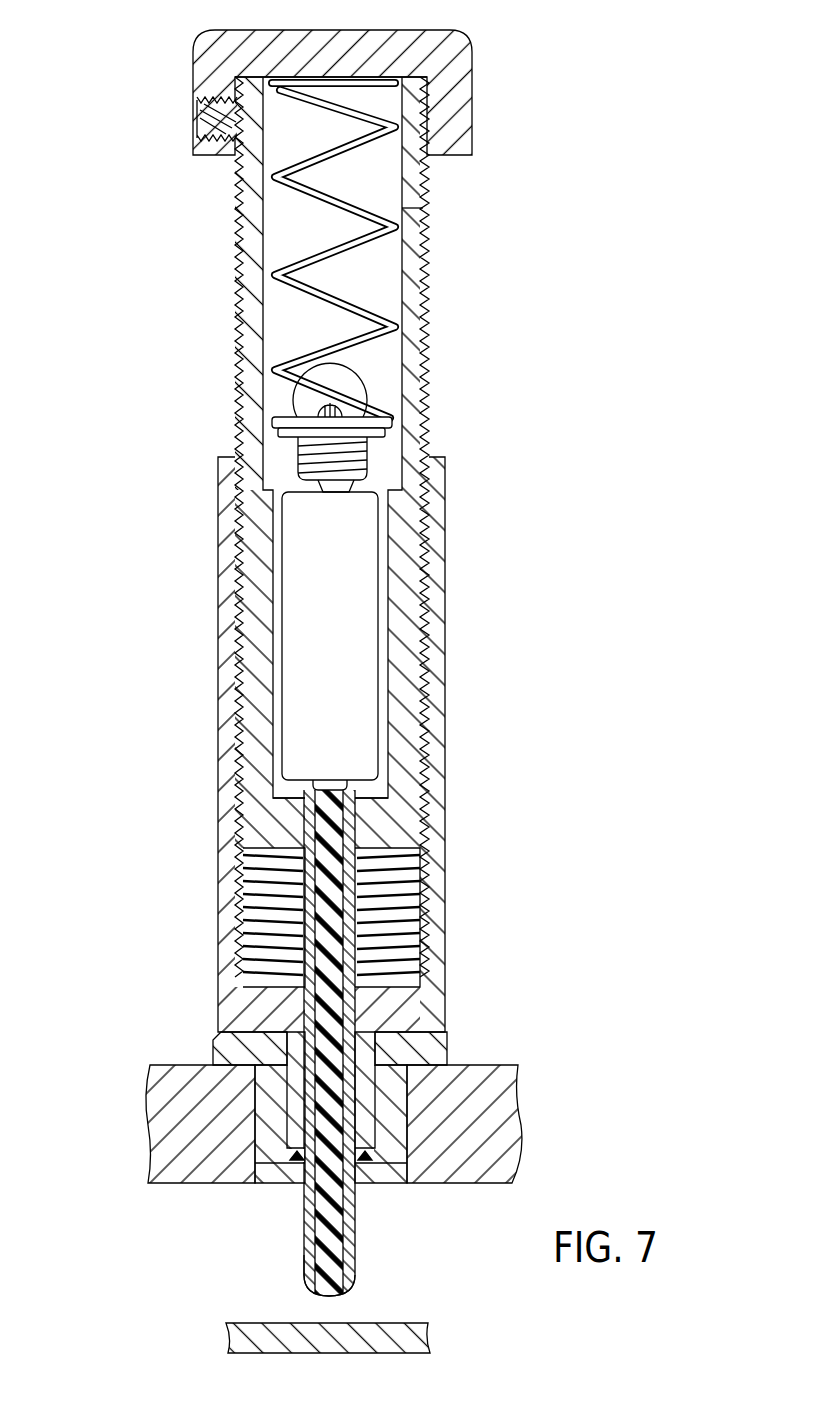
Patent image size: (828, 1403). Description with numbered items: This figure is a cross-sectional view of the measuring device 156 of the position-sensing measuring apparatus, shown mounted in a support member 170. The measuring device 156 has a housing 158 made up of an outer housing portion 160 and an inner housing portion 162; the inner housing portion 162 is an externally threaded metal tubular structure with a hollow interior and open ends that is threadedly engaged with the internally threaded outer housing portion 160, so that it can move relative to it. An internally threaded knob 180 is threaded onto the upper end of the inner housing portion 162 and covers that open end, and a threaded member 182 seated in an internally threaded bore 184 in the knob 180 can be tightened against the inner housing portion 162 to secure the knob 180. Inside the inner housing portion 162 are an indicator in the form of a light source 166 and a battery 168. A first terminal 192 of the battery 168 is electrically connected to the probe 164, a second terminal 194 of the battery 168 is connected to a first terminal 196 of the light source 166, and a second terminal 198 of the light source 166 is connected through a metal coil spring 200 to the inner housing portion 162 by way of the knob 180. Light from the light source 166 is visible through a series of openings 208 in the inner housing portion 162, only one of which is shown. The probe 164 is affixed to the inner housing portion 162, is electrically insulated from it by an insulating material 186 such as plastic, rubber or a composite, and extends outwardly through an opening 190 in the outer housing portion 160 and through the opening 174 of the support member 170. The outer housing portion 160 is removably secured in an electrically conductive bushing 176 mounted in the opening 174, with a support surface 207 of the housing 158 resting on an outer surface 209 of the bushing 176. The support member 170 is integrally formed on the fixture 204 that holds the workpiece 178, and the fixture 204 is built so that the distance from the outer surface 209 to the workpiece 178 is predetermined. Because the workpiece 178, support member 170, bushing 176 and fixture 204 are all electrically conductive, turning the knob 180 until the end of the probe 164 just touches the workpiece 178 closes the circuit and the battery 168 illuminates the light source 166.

The measuring device 156 is at (468, 637).
The housing 158 is at (490, 708).
The outer housing portion 160 is at (437, 884).
The inner housing portion 162 is at (415, 356).
The probe 164 is at (330, 1294).
The light source 166 is at (353, 390).
The battery 168 is at (354, 637).
The support member 170 is at (506, 1104).
The opening 174 is at (395, 1117).
The bushing 176 is at (438, 1058).
The workpiece 178 is at (424, 1332).
The knob 180 is at (452, 78).
The threaded member 182 is at (207, 125).
The internally threaded bore 184 is at (207, 113).
The insulating material 186 is at (342, 833).
The opening 190 is at (313, 1268).
The first terminal 192 is at (300, 787).
The second terminal 194 is at (349, 492).
The first terminal 196 is at (303, 492).
The second terminal 198 is at (288, 437).
The metal coil spring 200 is at (352, 308).
The fixture 204 is at (157, 1113).
The support surface 207 is at (230, 1036).
The openings 208 is at (418, 207).
The outer surface 209 is at (420, 1028).